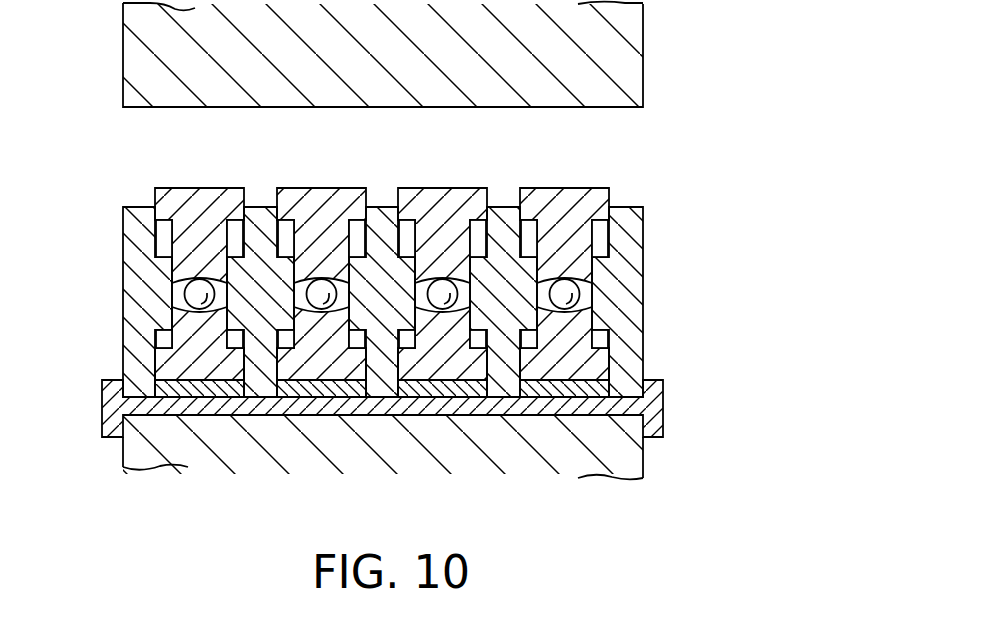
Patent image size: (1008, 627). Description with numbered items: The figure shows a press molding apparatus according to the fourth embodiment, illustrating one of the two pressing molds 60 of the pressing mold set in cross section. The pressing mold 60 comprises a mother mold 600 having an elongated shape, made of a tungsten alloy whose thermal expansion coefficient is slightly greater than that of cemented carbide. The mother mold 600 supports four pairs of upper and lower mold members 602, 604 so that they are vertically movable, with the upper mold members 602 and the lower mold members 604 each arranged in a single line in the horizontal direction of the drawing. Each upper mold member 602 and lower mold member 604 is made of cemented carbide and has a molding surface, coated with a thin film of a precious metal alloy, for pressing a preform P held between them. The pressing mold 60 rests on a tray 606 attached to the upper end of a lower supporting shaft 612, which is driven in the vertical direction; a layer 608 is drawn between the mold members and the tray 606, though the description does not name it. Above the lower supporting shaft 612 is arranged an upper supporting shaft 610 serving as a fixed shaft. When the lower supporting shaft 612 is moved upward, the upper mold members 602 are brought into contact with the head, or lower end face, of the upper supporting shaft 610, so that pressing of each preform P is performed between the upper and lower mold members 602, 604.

The pressing mold 60 is at (434, 264).
The mother mold 600 is at (377, 280).
The upper mold member 602 is at (230, 200).
The lower mold member 604 is at (221, 367).
The tray 606 is at (102, 427).
The adhesive layer 608 is at (337, 387).
The upper supporting shaft 610 is at (644, 52).
The lower supporting shaft 612 is at (643, 445).
The preform P is at (568, 295).